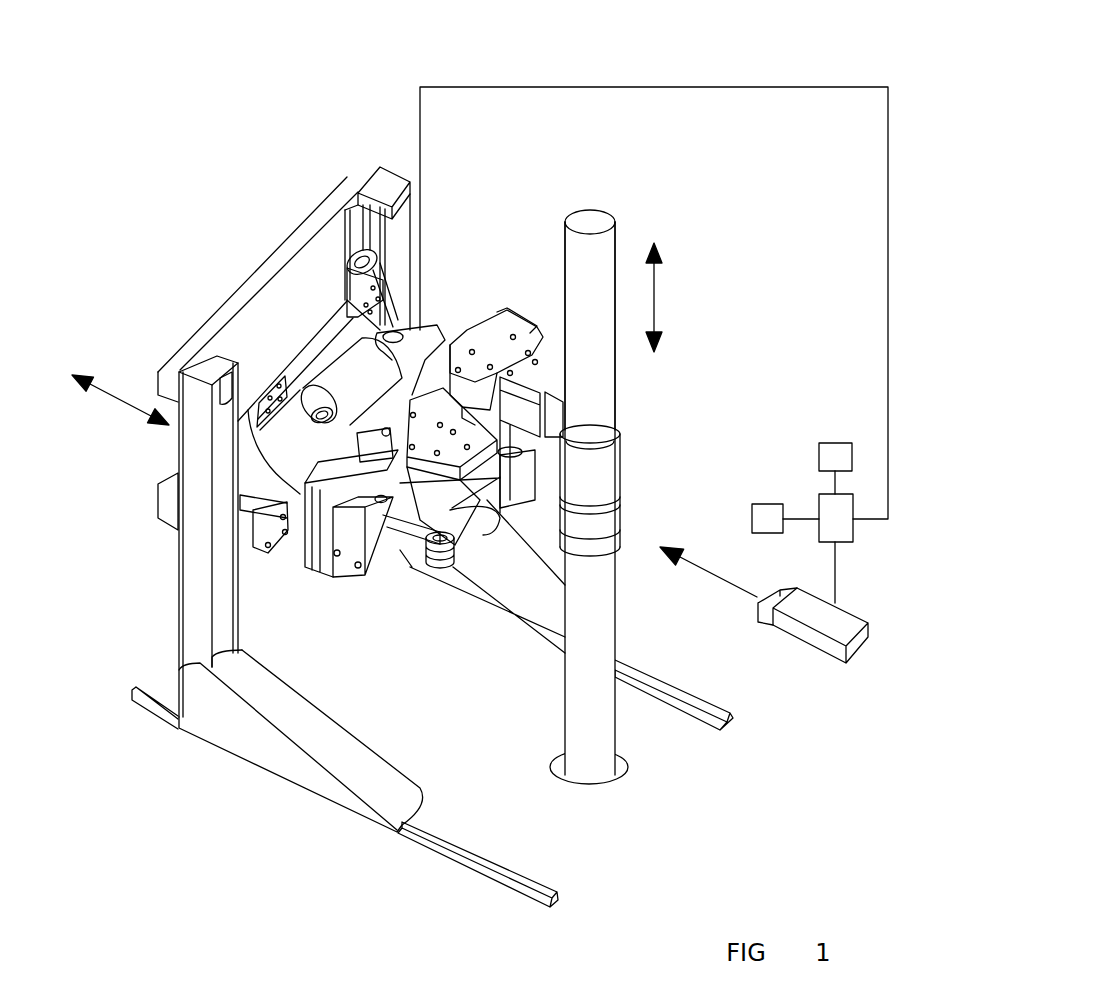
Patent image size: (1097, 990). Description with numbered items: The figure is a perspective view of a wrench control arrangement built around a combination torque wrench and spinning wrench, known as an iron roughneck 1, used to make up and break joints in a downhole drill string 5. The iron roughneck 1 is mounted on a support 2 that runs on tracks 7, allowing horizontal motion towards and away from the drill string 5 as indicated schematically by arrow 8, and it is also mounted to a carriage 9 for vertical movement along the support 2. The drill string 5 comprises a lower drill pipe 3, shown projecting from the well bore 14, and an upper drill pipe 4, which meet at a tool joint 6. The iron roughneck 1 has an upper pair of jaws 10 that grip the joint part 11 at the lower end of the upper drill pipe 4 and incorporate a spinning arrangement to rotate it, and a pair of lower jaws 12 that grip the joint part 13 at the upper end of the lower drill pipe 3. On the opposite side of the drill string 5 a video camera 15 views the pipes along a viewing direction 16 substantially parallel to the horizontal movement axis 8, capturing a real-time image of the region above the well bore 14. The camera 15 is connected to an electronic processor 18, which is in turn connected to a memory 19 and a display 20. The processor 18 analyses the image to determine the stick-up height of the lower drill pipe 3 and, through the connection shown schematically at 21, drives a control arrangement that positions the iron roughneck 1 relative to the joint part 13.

The iron roughneck 1 is at (479, 262).
The support 2 is at (155, 465).
The lower drill pipe 3 is at (588, 640).
The upper drill pipe 4 is at (593, 373).
The downhole drill string 5 is at (634, 205).
The tool joint 6 is at (640, 494).
The tracks 7 is at (692, 710).
The arrow (horizontal movement axis) 8 is at (113, 398).
The carriage 9 is at (300, 552).
The upper pair of jaws 10 is at (468, 447).
The joint part 11 is at (603, 467).
The pair of lower jaws 12 is at (520, 533).
The joint part 13 is at (607, 515).
The well bore 14 is at (623, 770).
The video camera 15 is at (815, 642).
The viewing direction 16 is at (735, 585).
The electronic processor 18 is at (847, 529).
The memory 19 is at (833, 443).
The display 20 is at (763, 504).
The connection to control arrangement 21 is at (618, 87).